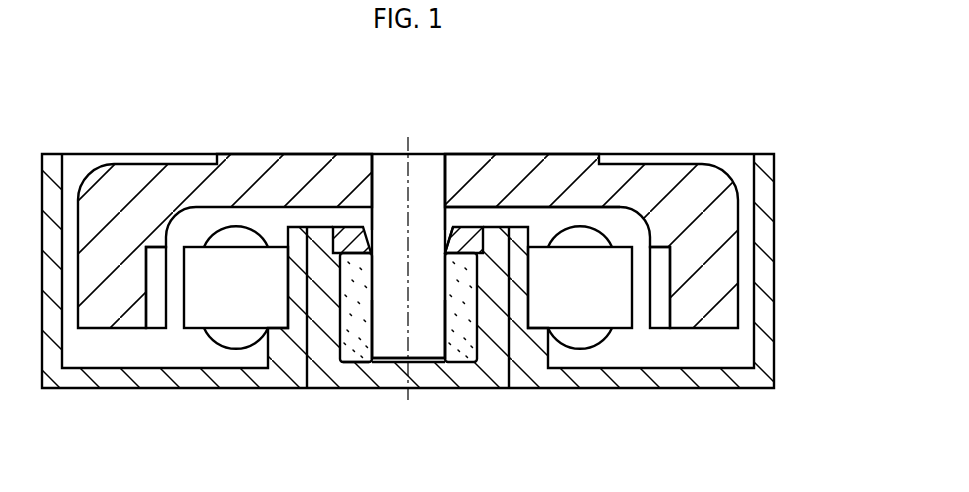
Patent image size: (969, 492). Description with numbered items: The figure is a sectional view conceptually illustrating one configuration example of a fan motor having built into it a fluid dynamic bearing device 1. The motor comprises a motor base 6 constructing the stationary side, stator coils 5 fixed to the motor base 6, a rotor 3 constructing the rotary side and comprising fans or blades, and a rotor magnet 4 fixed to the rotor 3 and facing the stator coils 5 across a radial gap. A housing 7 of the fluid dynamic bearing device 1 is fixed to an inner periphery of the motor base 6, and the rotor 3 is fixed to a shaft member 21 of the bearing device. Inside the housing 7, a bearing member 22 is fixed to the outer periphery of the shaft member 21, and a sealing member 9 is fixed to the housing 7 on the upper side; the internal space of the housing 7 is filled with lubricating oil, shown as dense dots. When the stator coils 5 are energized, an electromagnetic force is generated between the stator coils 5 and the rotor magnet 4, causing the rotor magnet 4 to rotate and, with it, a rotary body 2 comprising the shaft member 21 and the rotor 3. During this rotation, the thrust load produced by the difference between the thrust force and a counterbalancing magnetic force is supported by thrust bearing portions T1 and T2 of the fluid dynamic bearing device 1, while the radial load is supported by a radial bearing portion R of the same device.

The fluid dynamic bearing device 1 is at (485, 215).
The rotary body 2 is at (427, 152).
The shaft member 21 is at (393, 177).
The bearing member 22 is at (448, 336).
The rotor 3 is at (654, 175).
The rotor magnet 4 is at (660, 317).
The stator coils 5 is at (619, 320).
The motor base 6 is at (533, 374).
The housing 7 is at (470, 381).
The sealing member 9 is at (353, 238).
The radial bearing portion R is at (335, 283).
The thrust bearing portion T1 is at (356, 365).
The thrust bearing portion T2 is at (453, 246).